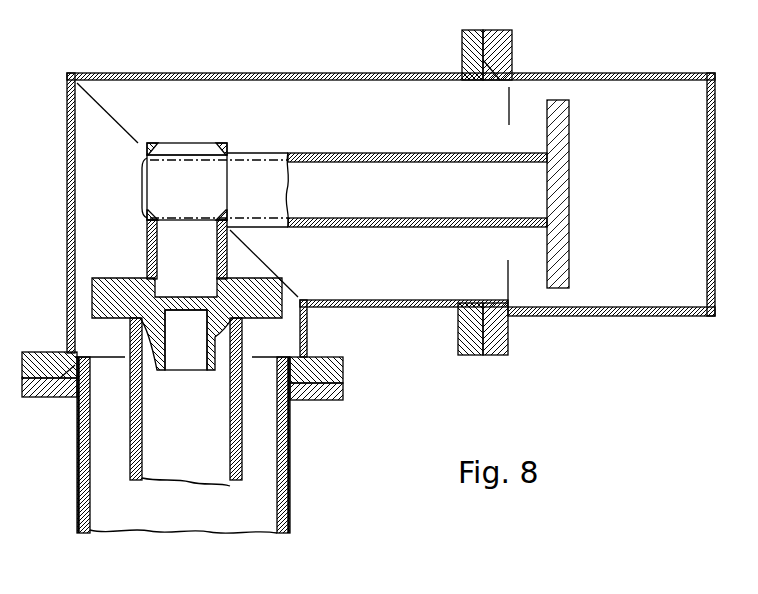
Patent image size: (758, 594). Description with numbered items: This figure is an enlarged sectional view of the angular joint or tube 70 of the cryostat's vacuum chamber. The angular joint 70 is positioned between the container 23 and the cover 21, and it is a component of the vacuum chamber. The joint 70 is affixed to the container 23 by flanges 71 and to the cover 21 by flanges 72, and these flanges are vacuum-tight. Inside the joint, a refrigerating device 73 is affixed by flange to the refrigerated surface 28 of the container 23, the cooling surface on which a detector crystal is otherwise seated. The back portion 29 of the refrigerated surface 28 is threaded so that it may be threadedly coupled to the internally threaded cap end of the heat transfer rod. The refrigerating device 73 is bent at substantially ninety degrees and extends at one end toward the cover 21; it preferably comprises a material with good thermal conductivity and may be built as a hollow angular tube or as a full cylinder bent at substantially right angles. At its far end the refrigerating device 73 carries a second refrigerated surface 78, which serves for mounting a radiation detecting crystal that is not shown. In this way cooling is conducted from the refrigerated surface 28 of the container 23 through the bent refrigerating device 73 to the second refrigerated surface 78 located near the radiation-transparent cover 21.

The cover 21 is at (631, 73).
The container 23 is at (290, 462).
The refrigerated surface 28 is at (102, 309).
The back portion of the refrigerated surface 29 is at (163, 373).
The angular joint 70 is at (67, 130).
The flanges 71 is at (343, 383).
The flanges 72 is at (470, 355).
The refrigerating device 73 is at (383, 227).
The second refrigerated surface 78 is at (563, 252).